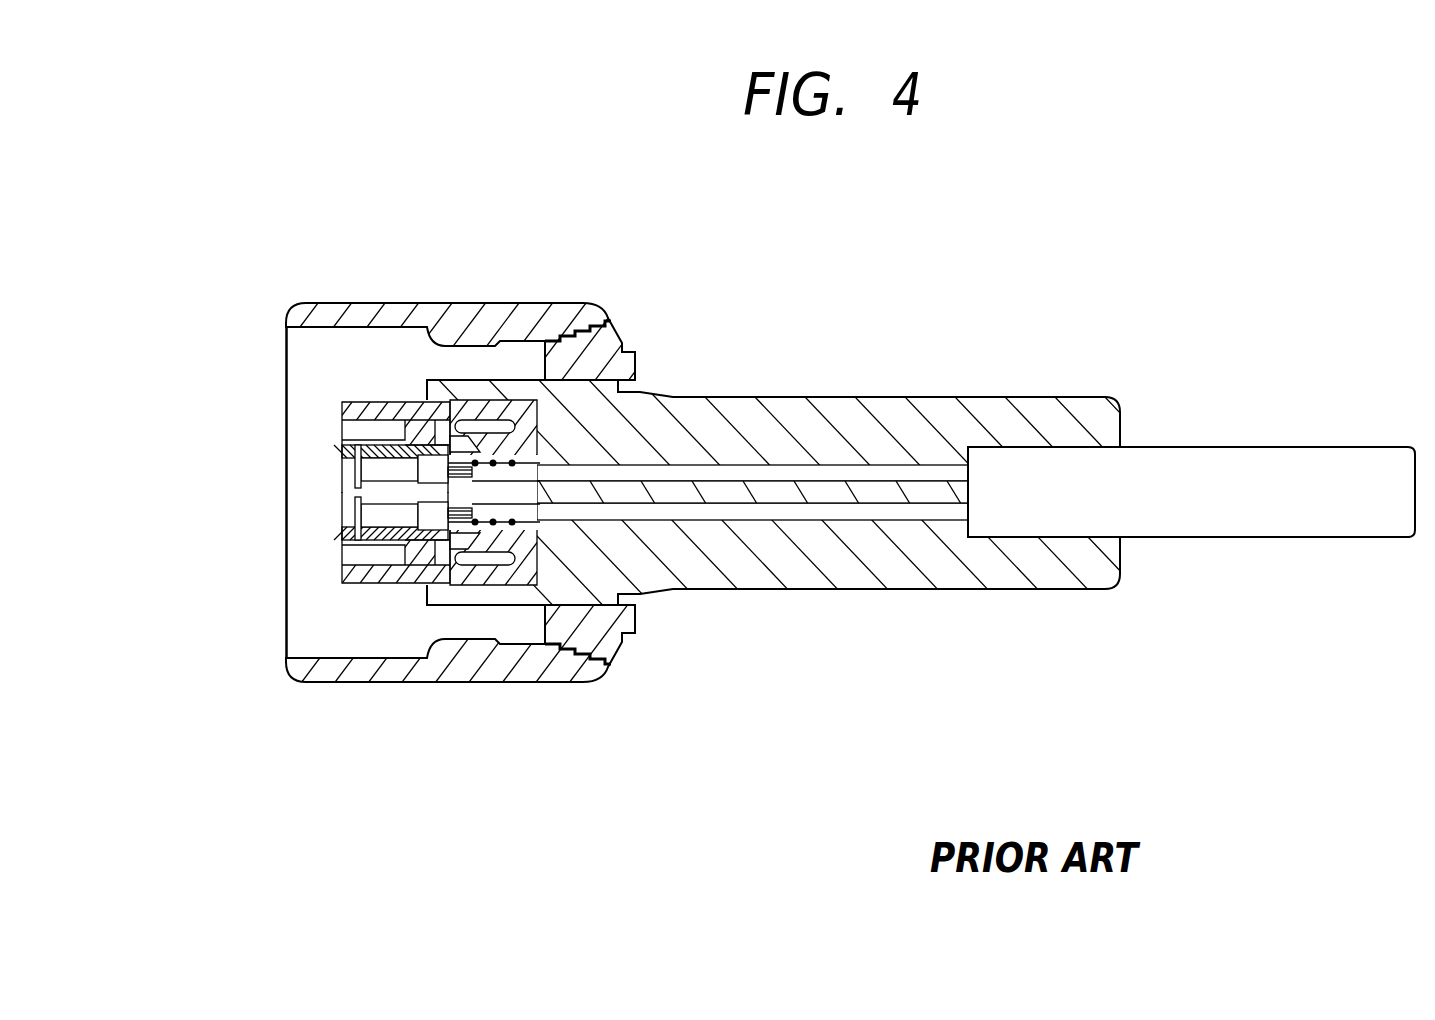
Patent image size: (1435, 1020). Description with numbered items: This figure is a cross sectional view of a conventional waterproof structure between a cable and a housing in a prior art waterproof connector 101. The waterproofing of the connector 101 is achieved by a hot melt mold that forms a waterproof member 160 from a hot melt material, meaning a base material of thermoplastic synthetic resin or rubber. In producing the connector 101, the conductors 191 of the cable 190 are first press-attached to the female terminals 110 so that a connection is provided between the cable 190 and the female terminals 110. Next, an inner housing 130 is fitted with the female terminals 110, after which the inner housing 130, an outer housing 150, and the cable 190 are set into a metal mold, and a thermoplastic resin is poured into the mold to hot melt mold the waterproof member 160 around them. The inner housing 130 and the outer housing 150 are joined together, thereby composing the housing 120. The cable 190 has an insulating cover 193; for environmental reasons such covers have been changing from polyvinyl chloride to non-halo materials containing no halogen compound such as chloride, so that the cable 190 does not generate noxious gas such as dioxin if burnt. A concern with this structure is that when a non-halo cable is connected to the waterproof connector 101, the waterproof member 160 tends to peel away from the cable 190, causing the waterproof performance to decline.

The waterproof connector 101 is at (399, 292).
The female terminals 110 is at (343, 466).
The housing 120 is at (378, 528).
The inner housing 130 is at (328, 541).
The outer housing 150 is at (141, 485).
The waterproof member 160 is at (827, 598).
The cable 190 is at (1277, 438).
The conductors 191 is at (779, 455).
The insulating cover 193 is at (1257, 541).